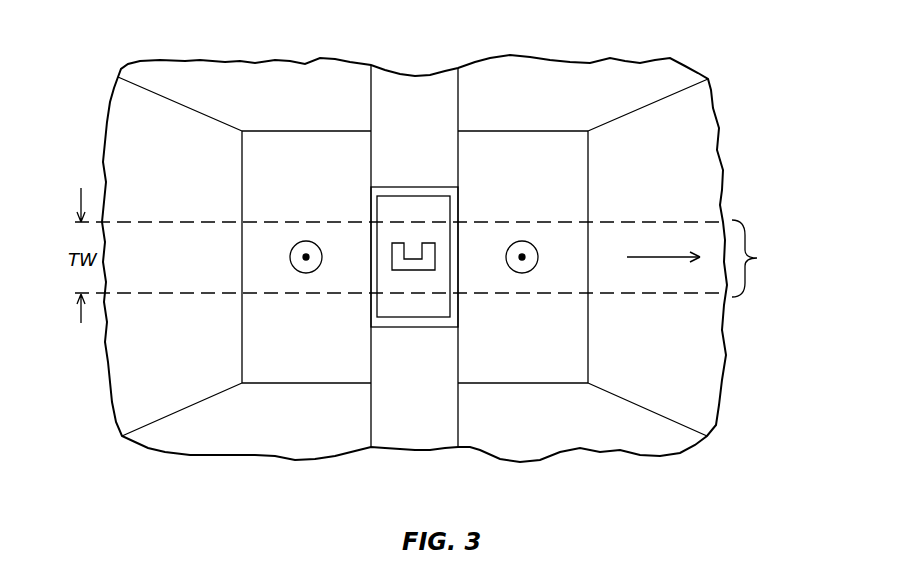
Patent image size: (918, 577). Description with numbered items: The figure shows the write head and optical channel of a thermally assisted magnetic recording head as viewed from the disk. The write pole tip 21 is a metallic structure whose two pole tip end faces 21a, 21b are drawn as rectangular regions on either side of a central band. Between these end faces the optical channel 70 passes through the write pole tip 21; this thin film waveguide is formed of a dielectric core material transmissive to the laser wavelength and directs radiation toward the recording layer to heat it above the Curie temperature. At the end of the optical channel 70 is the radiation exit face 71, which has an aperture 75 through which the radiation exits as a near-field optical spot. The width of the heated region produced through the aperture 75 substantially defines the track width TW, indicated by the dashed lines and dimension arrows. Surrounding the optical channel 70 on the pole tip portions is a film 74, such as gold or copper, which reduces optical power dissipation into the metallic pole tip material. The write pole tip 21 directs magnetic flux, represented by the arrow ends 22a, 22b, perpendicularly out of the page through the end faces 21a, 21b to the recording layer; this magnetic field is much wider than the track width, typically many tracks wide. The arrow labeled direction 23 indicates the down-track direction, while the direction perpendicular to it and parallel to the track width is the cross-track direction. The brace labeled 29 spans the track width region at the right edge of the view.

The write pole tip 21 is at (203, 70).
The pole tip end face 21a is at (278, 138).
The pole tip end face 21b is at (544, 140).
The optical channel 70 is at (387, 187).
The radiation exit face 71 is at (400, 308).
The film 74 is at (457, 225).
The aperture 75 is at (398, 243).
The arrow end 22a is at (308, 273).
The arrow end 22b is at (517, 273).
The down-track direction 23 is at (650, 258).
The track 29 is at (761, 258).